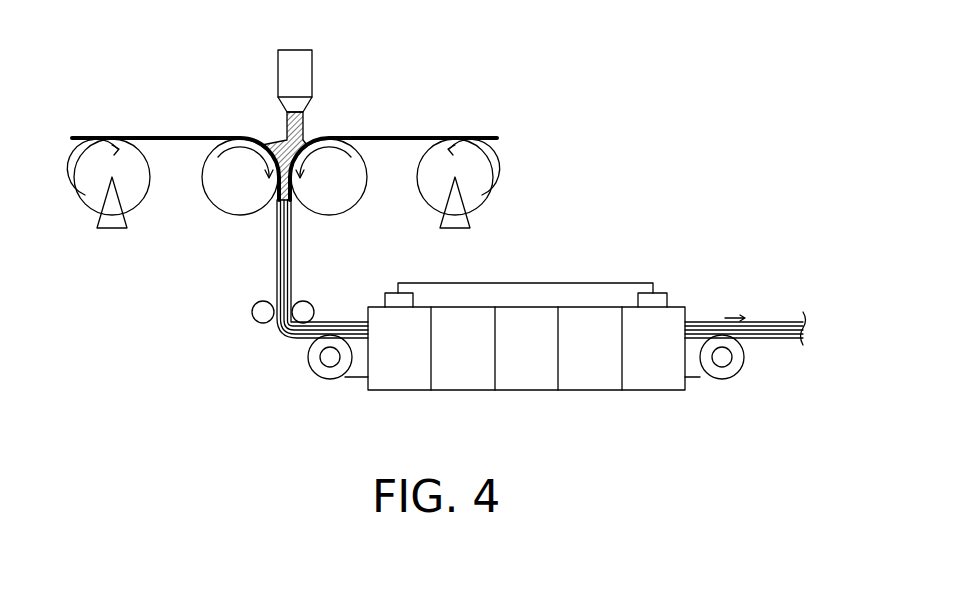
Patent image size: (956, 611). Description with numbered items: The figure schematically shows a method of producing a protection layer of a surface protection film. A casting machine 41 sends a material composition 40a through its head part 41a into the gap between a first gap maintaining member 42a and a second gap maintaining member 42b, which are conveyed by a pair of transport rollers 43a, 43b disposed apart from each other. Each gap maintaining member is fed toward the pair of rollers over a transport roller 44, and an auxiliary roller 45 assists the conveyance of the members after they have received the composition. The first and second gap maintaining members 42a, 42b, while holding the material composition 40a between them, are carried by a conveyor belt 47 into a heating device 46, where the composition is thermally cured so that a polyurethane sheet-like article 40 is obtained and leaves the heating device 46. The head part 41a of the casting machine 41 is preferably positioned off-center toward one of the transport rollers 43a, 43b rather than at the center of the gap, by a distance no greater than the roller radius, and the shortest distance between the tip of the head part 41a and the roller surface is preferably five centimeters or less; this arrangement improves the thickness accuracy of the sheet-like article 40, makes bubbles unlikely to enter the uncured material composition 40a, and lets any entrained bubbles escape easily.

The polyurethane sheet-like article 40 is at (777, 339).
The material composition 40a is at (287, 131).
The casting machine 41 is at (300, 72).
The head part 41a is at (303, 102).
The first gap maintaining member 42a is at (183, 135).
The second gap maintaining member 42b is at (393, 135).
The transport roller 43a is at (232, 210).
The transport roller 43b is at (342, 200).
The transport roller 44 is at (135, 195).
The auxiliary roller 45 is at (262, 312).
The heating device 46 is at (588, 385).
The conveyor belt 47 is at (325, 376).